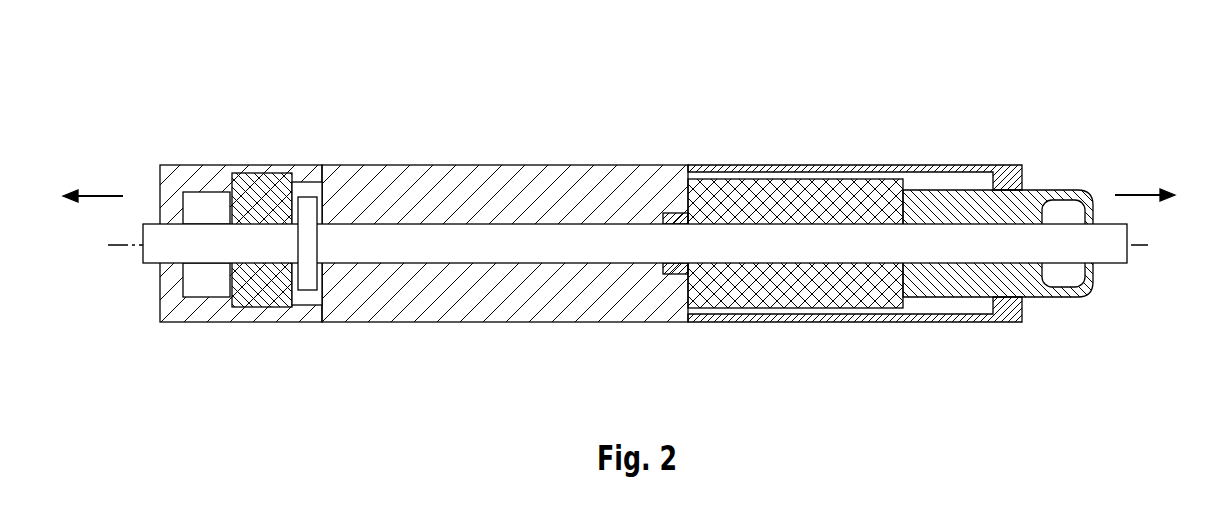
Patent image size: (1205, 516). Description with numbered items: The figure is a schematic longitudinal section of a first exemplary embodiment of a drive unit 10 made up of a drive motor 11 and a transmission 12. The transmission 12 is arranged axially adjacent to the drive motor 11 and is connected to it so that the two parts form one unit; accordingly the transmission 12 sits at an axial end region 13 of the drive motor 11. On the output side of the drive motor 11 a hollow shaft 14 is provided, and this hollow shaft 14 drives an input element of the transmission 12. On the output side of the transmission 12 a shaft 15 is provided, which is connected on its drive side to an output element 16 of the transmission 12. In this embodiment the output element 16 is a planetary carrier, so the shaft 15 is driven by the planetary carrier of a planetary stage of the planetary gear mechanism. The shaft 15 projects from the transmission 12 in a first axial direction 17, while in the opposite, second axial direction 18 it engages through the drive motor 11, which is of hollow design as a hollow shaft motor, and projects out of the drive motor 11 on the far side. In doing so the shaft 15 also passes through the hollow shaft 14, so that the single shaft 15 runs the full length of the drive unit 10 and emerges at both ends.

The drive unit 10 is at (1020, 107).
The drive motor 11 is at (800, 202).
The transmission 12 is at (446, 193).
The axial end region 13 is at (690, 176).
The hollow shaft 14 is at (670, 275).
The shaft 15 is at (459, 253).
The output element 16 is at (307, 287).
The first axial direction 17 is at (100, 190).
The second axial direction 18 is at (1145, 190).